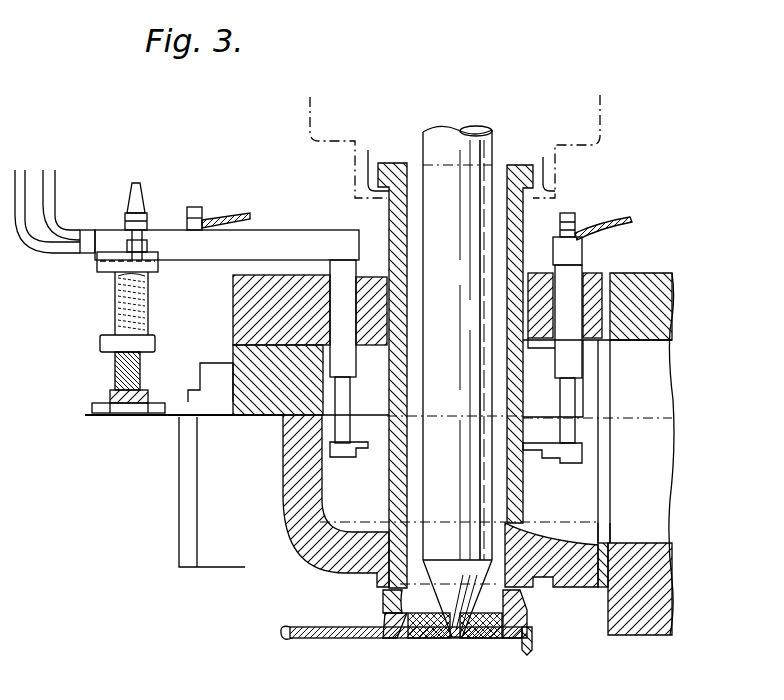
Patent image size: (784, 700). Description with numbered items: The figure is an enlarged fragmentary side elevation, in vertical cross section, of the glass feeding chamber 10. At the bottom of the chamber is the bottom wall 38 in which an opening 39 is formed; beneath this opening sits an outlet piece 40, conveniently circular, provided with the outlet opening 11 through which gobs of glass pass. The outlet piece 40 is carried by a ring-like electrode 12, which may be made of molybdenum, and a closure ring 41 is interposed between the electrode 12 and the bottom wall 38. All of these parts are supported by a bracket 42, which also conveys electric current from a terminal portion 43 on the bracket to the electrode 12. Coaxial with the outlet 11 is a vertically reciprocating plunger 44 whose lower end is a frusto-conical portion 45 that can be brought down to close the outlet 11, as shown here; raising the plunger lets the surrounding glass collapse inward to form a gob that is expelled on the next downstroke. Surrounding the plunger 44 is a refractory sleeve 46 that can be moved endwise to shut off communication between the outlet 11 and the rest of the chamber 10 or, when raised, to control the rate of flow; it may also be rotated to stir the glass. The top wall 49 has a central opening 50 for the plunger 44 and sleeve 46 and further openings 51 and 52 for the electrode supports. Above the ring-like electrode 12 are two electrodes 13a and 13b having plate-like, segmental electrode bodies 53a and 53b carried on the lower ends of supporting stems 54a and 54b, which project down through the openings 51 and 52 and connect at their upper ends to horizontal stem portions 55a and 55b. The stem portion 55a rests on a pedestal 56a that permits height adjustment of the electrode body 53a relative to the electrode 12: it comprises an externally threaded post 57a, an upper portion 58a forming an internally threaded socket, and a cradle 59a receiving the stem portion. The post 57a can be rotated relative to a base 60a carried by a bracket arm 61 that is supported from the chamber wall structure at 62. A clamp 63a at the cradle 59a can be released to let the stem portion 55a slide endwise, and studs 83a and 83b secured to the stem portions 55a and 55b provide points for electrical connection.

The feeding chamber 10 is at (574, 523).
The outlet opening 11 is at (465, 642).
The ring-like electrode 12 is at (512, 632).
The electrode 13a is at (337, 425).
The electrode 13b is at (575, 430).
The bottom wall 38 is at (580, 577).
The opening 39 is at (411, 541).
The outlet piece 40 is at (422, 628).
The closure ring 41 is at (527, 602).
The bracket 42 is at (330, 638).
The terminal portion 43 is at (284, 645).
The plunger 44 is at (472, 128).
The frusto-conical portion 45 is at (432, 632).
The sleeve 46 is at (397, 212).
The top wall 49 is at (290, 283).
The central opening 50 is at (533, 268).
The opening 51 is at (358, 282).
The opening 52 is at (585, 271).
The electrode body 53a is at (345, 460).
The electrode body 53b is at (574, 458).
The supporting stem 54a is at (343, 343).
The supporting stem 54b is at (570, 332).
The horizontal stem portion 55a is at (310, 226).
The horizontal stem portion 55b is at (583, 245).
The pedestal 56a is at (115, 292).
The post 57a is at (117, 365).
The upper portion 58a is at (117, 312).
The cradle 59a is at (97, 262).
The base 60a is at (108, 400).
The bracket arm 61 is at (158, 414).
The wall structure support 62 is at (212, 418).
The clamp 63a is at (143, 195).
The stud 83a is at (203, 212).
The stud 83b is at (575, 215).